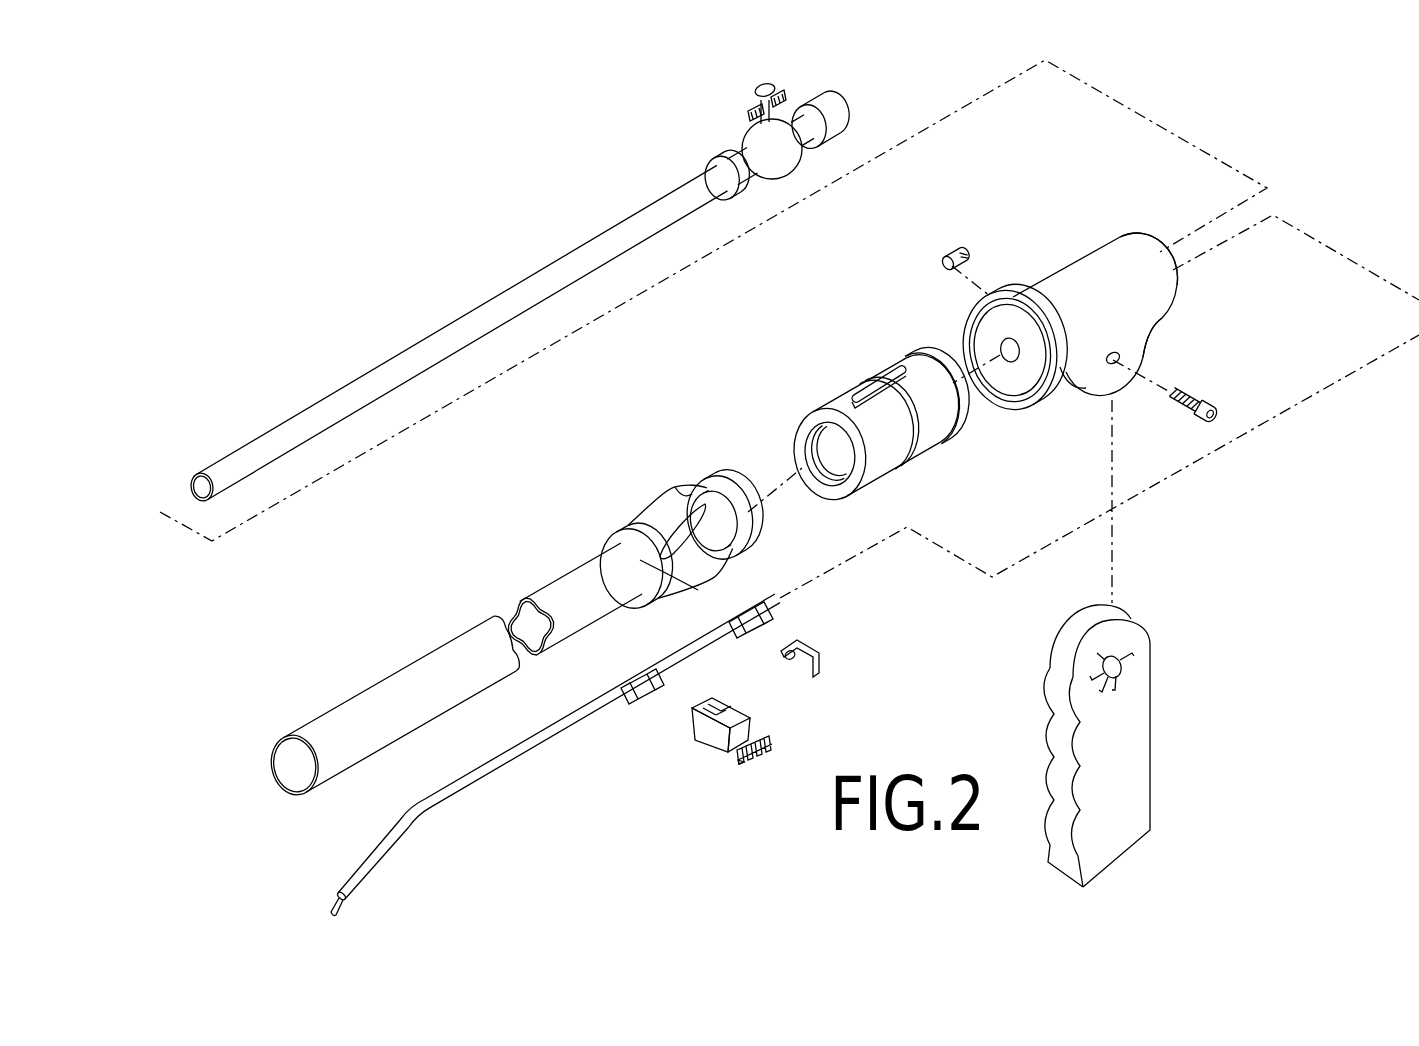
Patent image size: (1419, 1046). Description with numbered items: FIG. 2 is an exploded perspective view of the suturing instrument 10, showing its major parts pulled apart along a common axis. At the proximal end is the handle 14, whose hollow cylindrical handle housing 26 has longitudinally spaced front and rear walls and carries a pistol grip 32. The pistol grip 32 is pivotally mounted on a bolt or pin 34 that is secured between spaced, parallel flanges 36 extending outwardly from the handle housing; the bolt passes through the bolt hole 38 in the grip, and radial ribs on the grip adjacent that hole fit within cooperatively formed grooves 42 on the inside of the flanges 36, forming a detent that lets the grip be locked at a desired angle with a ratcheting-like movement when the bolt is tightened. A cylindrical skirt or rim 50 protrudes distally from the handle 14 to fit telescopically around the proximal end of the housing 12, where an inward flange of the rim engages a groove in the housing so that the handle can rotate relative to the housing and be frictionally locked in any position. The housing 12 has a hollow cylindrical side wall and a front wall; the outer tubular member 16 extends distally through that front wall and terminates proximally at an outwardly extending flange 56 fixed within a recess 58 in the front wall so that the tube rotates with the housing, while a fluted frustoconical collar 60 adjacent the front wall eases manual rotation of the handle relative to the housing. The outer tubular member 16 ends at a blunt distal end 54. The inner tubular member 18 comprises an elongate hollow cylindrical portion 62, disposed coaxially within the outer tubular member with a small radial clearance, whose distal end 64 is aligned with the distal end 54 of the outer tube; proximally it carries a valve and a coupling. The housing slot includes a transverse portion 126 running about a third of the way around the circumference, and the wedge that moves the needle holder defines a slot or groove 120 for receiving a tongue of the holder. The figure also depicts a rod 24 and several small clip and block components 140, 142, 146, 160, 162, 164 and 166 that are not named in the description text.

The suturing instrument 10 is at (434, 307).
The housing 12 is at (872, 358).
The handle 14 is at (1060, 260).
The outer tubular member 16 is at (352, 692).
The inner tubular member 18 is at (296, 412).
The rod 24 is at (534, 757).
The handle housing 26 is at (1120, 237).
The pistol grip 32 is at (1148, 756).
The bolt or pin 34 is at (950, 258).
The flanges 36 is at (1143, 357).
The bolt hole 38 is at (1113, 364).
The grooves 42 is at (1128, 662).
The cylindrical skirt or rim 50 is at (985, 300).
The distal end of outer tubular member 54 is at (278, 778).
The flange 56 is at (718, 474).
The recess 58 is at (815, 448).
The frustoconical collar 60 is at (610, 527).
The elongate cylindrical portion 62 is at (531, 275).
The distal end of inner tubular member 64 is at (198, 486).
The slot or groove 120 is at (690, 730).
The transverse portion 126 is at (851, 400).
The comb member 140 is at (755, 760).
The clip 142 is at (745, 724).
The cylinder rear end 146 is at (940, 440).
The block body 160 is at (697, 746).
The bracket clip 162 is at (667, 678).
The bracket clip 164 is at (643, 698).
The retaining clip 166 is at (800, 647).